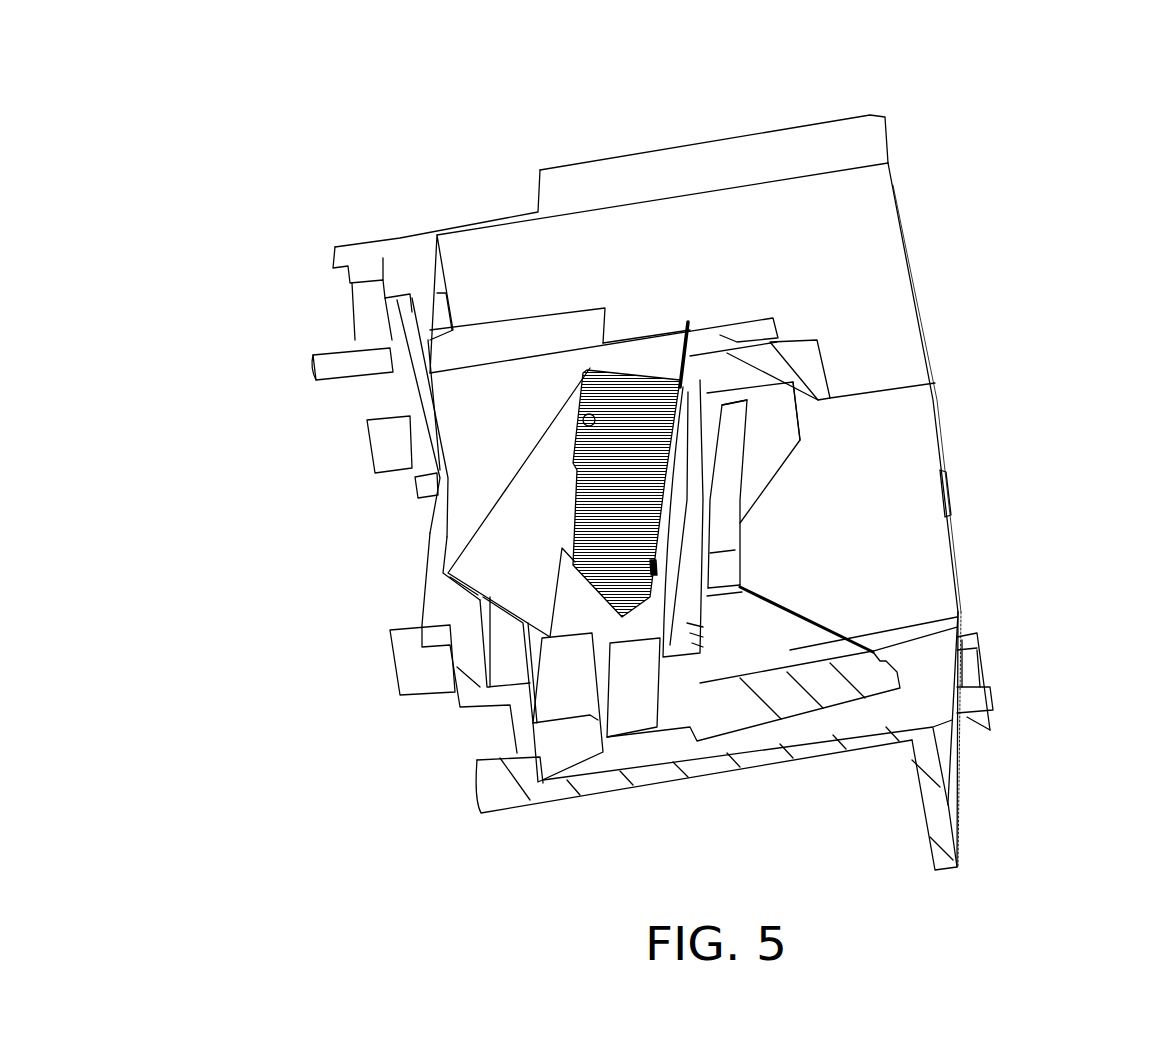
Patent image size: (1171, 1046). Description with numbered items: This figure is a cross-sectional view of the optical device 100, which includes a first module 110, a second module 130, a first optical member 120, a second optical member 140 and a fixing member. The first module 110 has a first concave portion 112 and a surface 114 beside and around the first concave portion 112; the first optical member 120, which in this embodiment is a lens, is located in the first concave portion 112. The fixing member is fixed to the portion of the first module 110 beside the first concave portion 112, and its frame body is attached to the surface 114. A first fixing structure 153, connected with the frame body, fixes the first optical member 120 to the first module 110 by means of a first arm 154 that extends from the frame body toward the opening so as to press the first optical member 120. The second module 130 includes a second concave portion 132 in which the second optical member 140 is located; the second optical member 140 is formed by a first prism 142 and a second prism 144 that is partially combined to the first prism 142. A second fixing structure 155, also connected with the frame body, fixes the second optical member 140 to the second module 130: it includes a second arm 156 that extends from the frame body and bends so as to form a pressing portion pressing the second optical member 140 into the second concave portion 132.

The optical device 100 is at (1095, 124).
The first module 110 is at (807, 355).
The first concave portion 112 is at (753, 410).
The surface 114 is at (700, 358).
The first optical member 120 is at (700, 465).
The second module 130 is at (373, 250).
The second concave portion 132 is at (453, 370).
The second optical member 140 is at (222, 456).
The first prism 142 is at (467, 427).
The second prism 144 is at (513, 540).
The first fixing structure 153 is at (727, 717).
The first arm 154 is at (653, 572).
The second fixing structure 155 is at (529, 331).
The second arm 156 is at (583, 372).